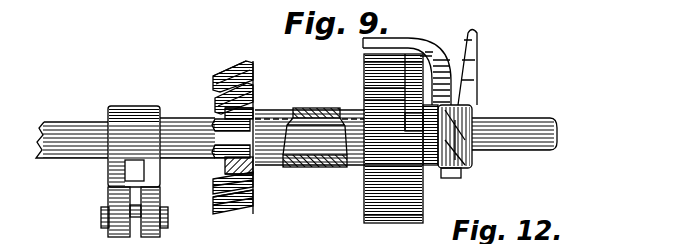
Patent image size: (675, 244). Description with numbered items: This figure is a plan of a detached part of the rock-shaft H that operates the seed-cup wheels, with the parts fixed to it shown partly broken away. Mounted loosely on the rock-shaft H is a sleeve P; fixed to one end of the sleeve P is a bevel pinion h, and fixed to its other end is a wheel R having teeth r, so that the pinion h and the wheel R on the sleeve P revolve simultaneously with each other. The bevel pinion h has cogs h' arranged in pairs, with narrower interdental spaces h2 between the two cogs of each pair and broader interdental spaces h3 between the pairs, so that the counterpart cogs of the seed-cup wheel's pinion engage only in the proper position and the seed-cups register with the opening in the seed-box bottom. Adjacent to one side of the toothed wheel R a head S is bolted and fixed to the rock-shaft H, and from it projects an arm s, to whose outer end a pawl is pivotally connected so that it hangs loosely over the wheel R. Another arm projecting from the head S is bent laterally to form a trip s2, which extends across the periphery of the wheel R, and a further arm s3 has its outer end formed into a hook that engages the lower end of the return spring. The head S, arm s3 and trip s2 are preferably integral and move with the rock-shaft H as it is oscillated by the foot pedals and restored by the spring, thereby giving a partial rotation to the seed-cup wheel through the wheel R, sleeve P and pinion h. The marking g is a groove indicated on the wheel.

The rock-shaft H is at (58, 123).
The bevel pinion h is at (220, 137).
The cogs h' is at (226, 148).
The narrower interdental spaces h2 is at (215, 85).
The broader interdental spaces h3 is at (247, 103).
The sleeve P is at (293, 167).
The wheel R is at (365, 197).
The teeth r is at (364, 70).
The arm s is at (365, 88).
The groove g is at (412, 122).
The head S is at (460, 95).
The trip s2 is at (422, 44).
The arm s3 is at (473, 36).